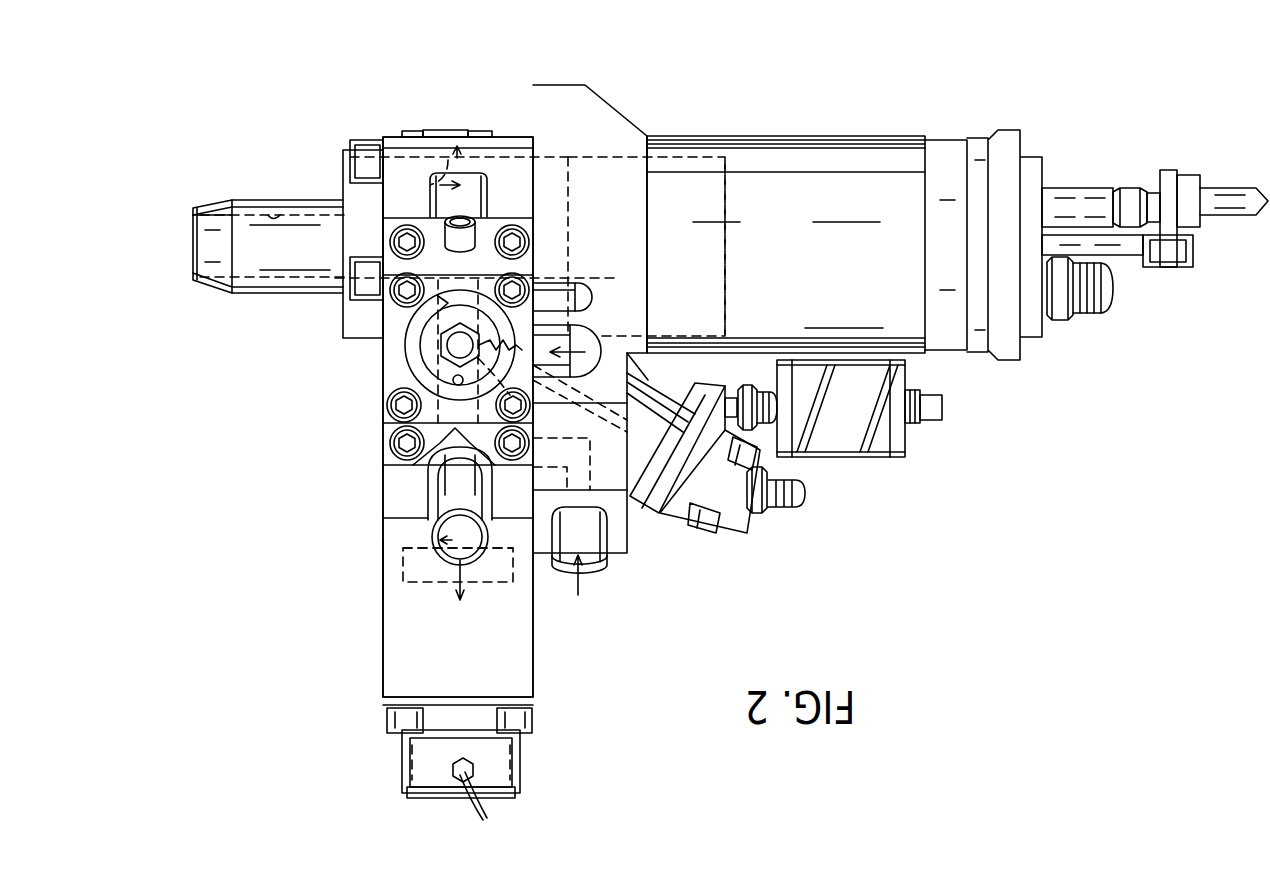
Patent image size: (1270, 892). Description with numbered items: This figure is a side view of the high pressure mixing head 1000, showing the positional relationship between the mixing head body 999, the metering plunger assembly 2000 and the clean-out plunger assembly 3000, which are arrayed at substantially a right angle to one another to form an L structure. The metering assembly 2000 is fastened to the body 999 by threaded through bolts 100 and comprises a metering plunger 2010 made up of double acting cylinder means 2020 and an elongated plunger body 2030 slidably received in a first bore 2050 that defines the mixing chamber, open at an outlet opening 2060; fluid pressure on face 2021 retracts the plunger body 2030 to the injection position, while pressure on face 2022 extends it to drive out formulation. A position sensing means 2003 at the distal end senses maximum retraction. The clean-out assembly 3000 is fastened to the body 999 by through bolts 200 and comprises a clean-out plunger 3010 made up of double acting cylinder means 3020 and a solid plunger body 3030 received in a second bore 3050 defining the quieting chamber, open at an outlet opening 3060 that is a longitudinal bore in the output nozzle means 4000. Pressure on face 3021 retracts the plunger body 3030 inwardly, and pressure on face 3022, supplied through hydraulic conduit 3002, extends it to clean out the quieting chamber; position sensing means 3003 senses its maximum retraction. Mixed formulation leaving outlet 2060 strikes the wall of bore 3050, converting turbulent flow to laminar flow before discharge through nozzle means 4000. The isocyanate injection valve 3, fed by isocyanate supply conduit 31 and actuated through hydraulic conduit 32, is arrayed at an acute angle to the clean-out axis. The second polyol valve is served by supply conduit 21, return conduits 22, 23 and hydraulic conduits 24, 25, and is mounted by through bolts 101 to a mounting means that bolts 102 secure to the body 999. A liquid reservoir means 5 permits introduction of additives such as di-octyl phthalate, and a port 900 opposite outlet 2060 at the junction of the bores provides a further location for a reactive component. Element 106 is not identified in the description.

The high pressure mixing head 1000 is at (290, 765).
The metering plunger assembly 2000 is at (378, 668).
The position sensing means 2003 is at (430, 796).
The metering plunger 2010 is at (440, 590).
The double acting cylinder means 2020 is at (373, 575).
The piston face 2021 is at (405, 536).
The piston face 2022 is at (405, 582).
The plunger body 2030 is at (398, 386).
The first bore 2050 is at (418, 327).
The outlet opening 2060 is at (470, 276).
The through bolts 100 is at (393, 720).
The through bolts 101 is at (393, 294).
The bolts 102 is at (395, 243).
The cover plate 106 is at (430, 131).
The through bolts 200 is at (367, 148).
The port 900 is at (458, 131).
The mixing head body 999 is at (509, 152).
The supply conduit 21 is at (580, 350).
The return conduit 22 is at (440, 498).
The return conduit 23 is at (480, 203).
The hydraulic conduit 24 is at (588, 290).
The hydraulic conduit 25 is at (470, 238).
The isocyanate injection valve 3 is at (662, 547).
The isocyanate supply conduit 31 is at (605, 553).
The hydraulic conduit 32 is at (760, 512).
The liquid reservoir means 5 is at (880, 455).
The clean-out plunger assembly 3000 is at (891, 121).
The hydraulic conduit 3002 is at (1093, 310).
The position sensing means 3003 is at (1092, 188).
The clean-out plunger 3010 is at (725, 263).
The double acting cylinder means 3020 is at (771, 129).
The piston face 3021 is at (566, 155).
The piston face 3022 is at (725, 160).
The plunger body 3030 is at (262, 275).
The second bore 3050 is at (272, 216).
The outlet opening 3060 is at (200, 215).
The output nozzle means 4000 is at (213, 290).